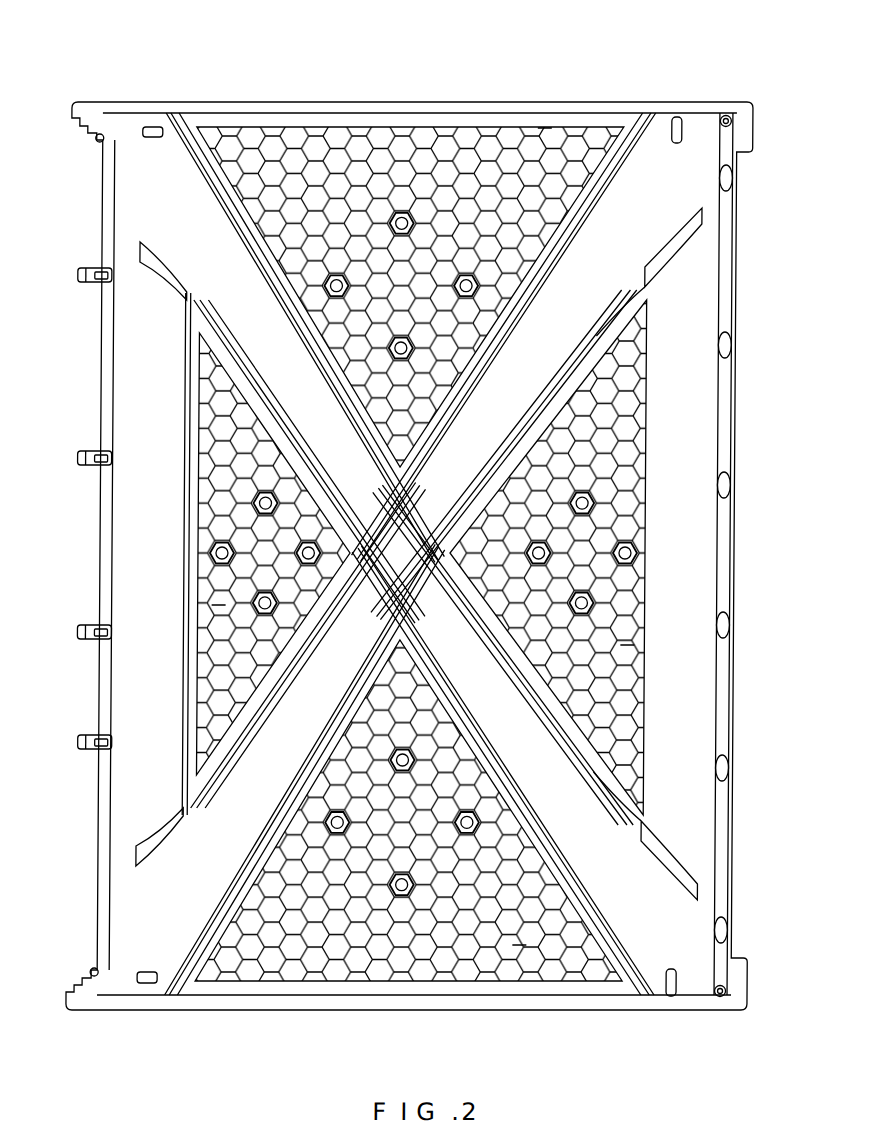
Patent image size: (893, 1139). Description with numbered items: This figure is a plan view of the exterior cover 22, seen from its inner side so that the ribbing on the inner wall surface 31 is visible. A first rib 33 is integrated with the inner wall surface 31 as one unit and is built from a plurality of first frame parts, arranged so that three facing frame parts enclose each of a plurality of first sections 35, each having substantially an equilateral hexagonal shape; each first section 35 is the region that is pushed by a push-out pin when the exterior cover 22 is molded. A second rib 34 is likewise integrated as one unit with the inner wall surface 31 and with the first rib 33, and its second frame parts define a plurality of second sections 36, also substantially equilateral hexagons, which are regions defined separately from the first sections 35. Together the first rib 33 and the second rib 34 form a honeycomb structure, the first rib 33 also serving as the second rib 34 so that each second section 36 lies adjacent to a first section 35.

The exterior cover 22 is at (90, 86).
The inner wall surface 31 is at (136, 196).
The first rib 33 is at (338, 276).
The second rib 34 is at (541, 140).
The first section 35 is at (324, 270).
The second section 36 is at (545, 135).